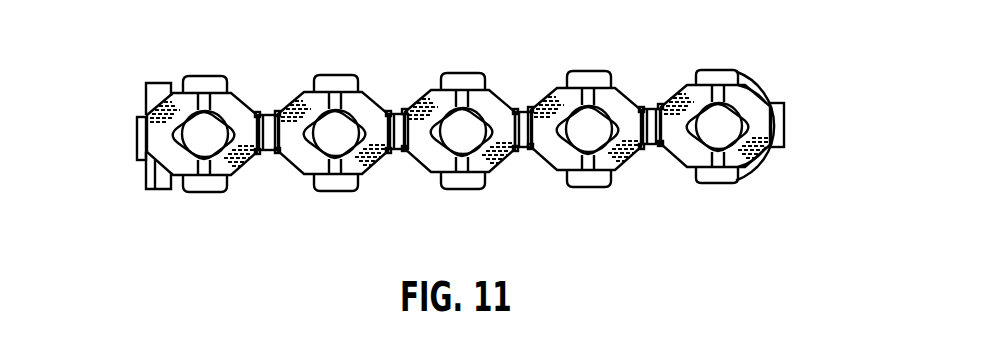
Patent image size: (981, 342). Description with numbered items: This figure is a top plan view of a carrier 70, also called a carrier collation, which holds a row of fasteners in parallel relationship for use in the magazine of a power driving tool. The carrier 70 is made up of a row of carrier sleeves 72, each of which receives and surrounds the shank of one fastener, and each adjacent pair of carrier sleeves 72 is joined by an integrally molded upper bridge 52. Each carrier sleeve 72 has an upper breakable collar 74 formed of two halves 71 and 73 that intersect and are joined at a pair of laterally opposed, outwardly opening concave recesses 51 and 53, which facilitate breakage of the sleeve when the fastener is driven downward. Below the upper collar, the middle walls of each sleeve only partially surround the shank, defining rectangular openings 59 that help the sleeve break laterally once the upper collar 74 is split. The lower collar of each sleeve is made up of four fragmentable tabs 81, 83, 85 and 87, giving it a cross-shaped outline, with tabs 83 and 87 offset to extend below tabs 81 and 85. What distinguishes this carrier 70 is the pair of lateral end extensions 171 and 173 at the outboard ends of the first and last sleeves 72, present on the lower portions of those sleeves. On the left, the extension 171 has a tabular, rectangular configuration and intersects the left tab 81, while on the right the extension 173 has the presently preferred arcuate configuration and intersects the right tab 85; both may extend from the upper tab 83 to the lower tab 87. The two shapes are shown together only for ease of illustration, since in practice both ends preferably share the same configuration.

The concave recess 51 is at (470, 100).
The upper bridge 52 is at (268, 118).
The concave recess 53 is at (468, 160).
The rectangular opening 59 is at (575, 123).
The carrier 70 is at (158, 152).
The half of upper breakable collar 71 is at (430, 153).
The carrier sleeve 72 is at (180, 163).
The half of upper breakable collar 73 is at (498, 150).
The upper breakable collar 74 is at (755, 98).
The fragmentable tab 81 is at (140, 142).
The fragmentable tab 83 is at (718, 72).
The fragmentable tab 85 is at (786, 125).
The fragmentable tab 87 is at (720, 178).
The lateral end extension 171 is at (150, 98).
The lateral end extension 173 is at (750, 105).